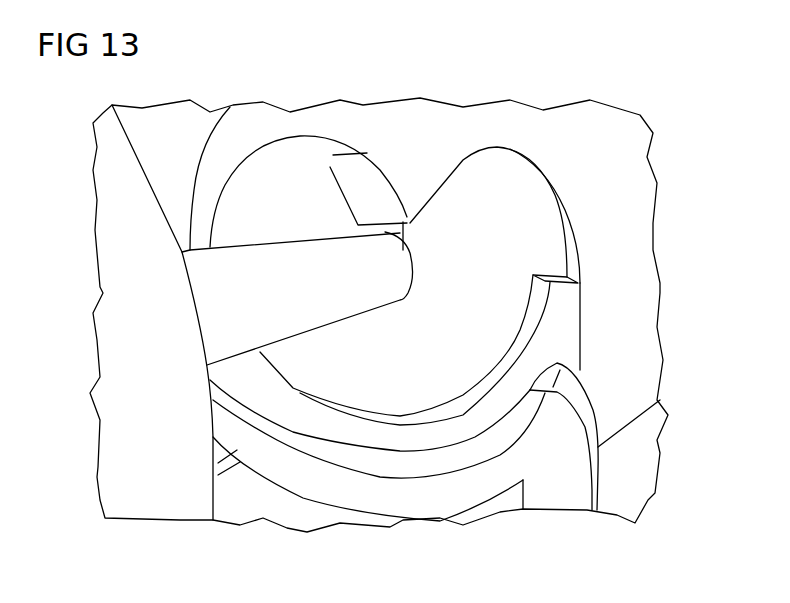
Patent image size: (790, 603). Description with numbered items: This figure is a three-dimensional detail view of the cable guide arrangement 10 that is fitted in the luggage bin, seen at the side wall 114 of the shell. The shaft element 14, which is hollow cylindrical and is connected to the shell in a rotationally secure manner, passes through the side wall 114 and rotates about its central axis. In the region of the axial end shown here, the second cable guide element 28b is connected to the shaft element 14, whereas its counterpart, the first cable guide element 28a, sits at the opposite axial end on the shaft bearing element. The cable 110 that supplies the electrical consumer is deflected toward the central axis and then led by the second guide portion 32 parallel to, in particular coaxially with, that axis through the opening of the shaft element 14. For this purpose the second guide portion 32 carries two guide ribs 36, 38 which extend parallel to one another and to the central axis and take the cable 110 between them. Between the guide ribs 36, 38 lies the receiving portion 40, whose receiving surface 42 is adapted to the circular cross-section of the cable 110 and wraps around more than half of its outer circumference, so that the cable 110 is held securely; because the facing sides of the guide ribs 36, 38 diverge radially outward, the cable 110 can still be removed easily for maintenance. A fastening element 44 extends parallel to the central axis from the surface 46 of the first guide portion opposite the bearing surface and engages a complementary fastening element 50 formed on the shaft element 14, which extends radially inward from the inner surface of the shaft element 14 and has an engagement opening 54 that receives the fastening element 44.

The cable guide arrangement 10 is at (650, 82).
The shaft element 14 is at (647, 457).
The first cable guide element 28a is at (115, 331).
The second cable guide element 28b is at (596, 309).
The second guide portion 32 is at (583, 218).
The guide rib 36 is at (497, 160).
The guide rib 38 is at (287, 153).
The receiving portion 40 is at (405, 303).
The receiving surface 42 is at (400, 277).
The fastening element 44 is at (240, 510).
The surface 46 is at (560, 348).
The complementary fastening element 50 is at (548, 500).
The engagement opening 54 is at (280, 487).
The cable 110 is at (277, 256).
The side wall 114 is at (643, 178).